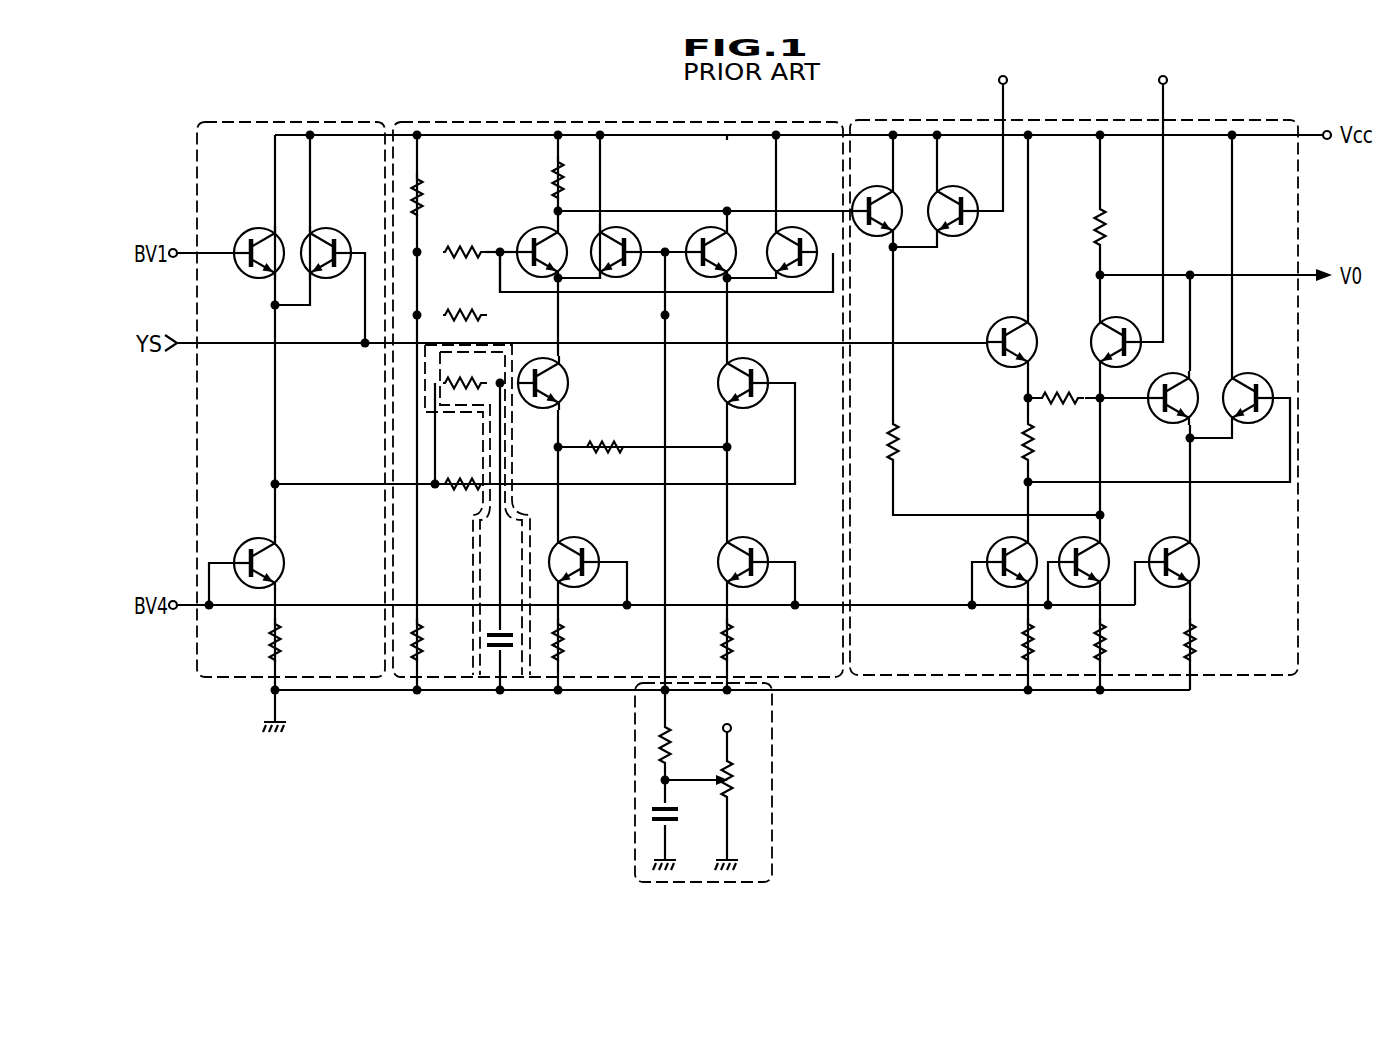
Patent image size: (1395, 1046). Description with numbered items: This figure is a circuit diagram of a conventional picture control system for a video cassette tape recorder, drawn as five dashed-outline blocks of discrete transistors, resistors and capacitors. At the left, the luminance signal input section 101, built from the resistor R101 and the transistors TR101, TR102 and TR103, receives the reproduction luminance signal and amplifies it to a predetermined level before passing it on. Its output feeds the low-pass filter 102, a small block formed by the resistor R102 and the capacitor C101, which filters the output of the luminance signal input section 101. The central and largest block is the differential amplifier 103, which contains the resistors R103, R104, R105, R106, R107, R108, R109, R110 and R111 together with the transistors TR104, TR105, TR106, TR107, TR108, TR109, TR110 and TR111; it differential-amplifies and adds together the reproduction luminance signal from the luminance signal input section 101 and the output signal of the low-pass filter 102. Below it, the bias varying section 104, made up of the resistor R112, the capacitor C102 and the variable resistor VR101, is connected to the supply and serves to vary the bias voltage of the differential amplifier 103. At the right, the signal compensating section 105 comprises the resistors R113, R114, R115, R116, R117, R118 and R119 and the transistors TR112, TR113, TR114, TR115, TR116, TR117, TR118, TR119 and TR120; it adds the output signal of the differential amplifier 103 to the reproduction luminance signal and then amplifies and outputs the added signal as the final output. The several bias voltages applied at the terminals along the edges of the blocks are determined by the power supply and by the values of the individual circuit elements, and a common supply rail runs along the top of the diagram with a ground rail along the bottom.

The luminance signal input section 101 is at (247, 122).
The low-pass filter 102 is at (477, 556).
The differential amplifier 103 is at (553, 122).
The bias varying section 104 is at (772, 760).
The signal compensating section 105 is at (933, 120).
The transistor TR101 is at (247, 240).
The transistor TR102 is at (336, 240).
The transistor TR103 is at (287, 563).
The transistor TR104 is at (531, 241).
The transistor TR105 is at (625, 232).
The transistor TR106 is at (719, 232).
The transistor TR107 is at (801, 232).
The transistor TR108 is at (572, 383).
The transistor TR109 is at (772, 378).
The transistor TR110 is at (588, 549).
The transistor TR111 is at (755, 549).
The transistor TR112 is at (879, 200).
The transistor TR113 is at (961, 200).
The transistor TR114 is at (999, 330).
The transistor TR115 is at (1125, 330).
The transistor TR116 is at (999, 549).
The transistor TR117 is at (1075, 549).
The transistor TR118 is at (1163, 408).
The transistor TR119 is at (1257, 386).
The transistor TR120 is at (1203, 562).
The resistor R101 is at (301, 640).
The resistor R102 is at (466, 371).
The resistor R103 is at (443, 195).
The resistor R104 is at (443, 640).
The resistor R105 is at (461, 240).
The resistor R106 is at (461, 303).
The resistor R107 is at (532, 178).
The resistor R108 is at (463, 472).
The resistor R109 is at (586, 640).
The resistor R110 is at (609, 435).
The resistor R111 is at (755, 640).
The resistor R112 is at (689, 743).
The resistor R113 is at (918, 440).
The resistor R114 is at (1053, 440).
The resistor R115 is at (1062, 386).
The resistor R116 is at (1055, 640).
The resistor R117 is at (1123, 225).
The resistor R118 is at (1126, 640).
The resistor R119 is at (1216, 640).
The capacitor C101 is at (499, 626).
The capacitor C102 is at (687, 815).
The variable resistor VR101 is at (747, 785).